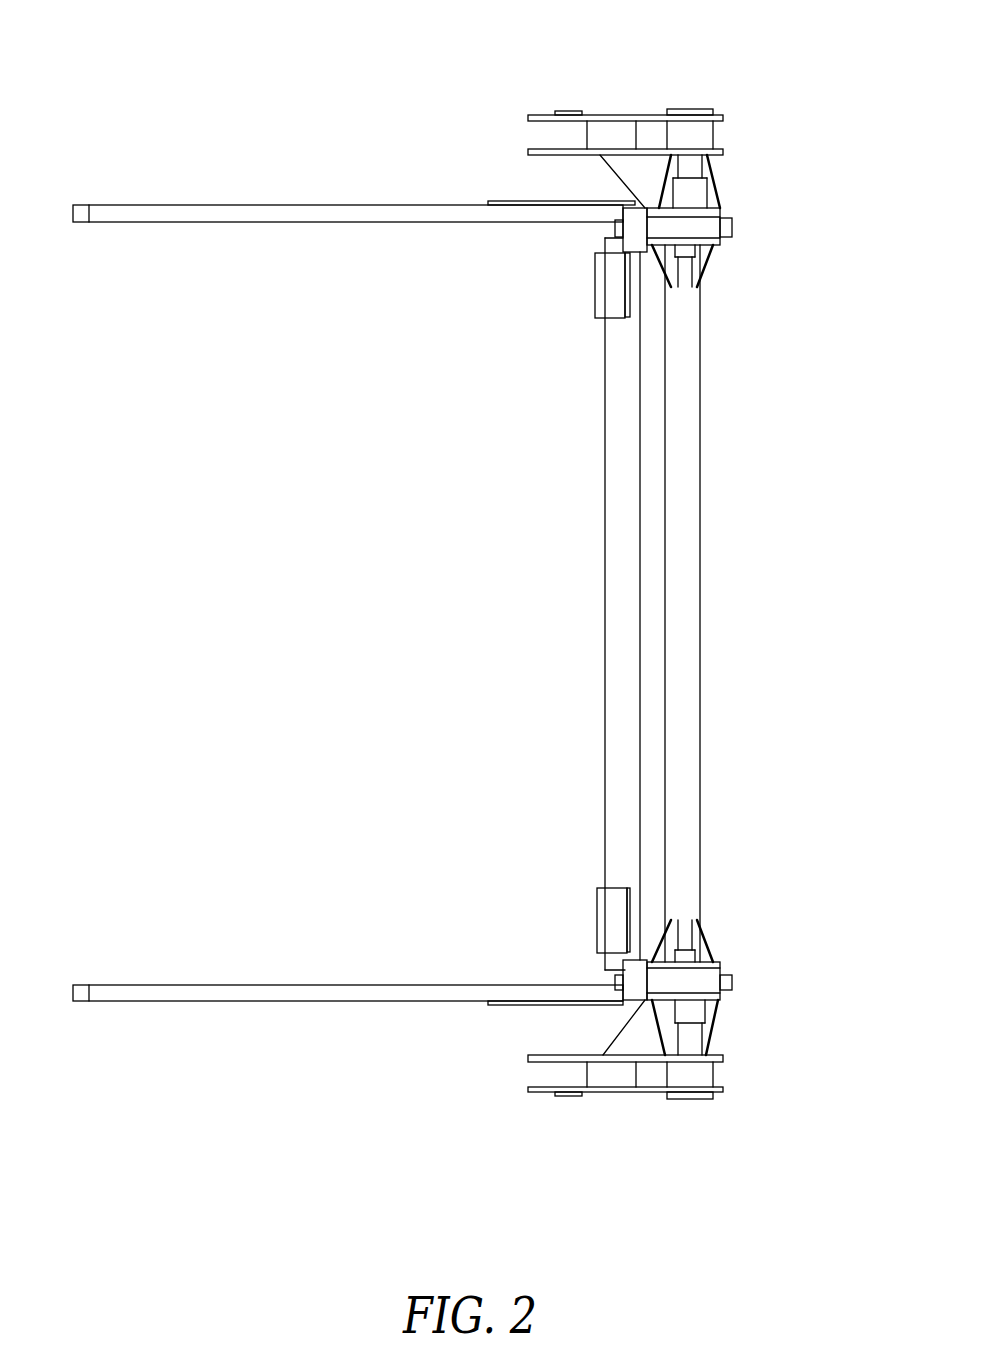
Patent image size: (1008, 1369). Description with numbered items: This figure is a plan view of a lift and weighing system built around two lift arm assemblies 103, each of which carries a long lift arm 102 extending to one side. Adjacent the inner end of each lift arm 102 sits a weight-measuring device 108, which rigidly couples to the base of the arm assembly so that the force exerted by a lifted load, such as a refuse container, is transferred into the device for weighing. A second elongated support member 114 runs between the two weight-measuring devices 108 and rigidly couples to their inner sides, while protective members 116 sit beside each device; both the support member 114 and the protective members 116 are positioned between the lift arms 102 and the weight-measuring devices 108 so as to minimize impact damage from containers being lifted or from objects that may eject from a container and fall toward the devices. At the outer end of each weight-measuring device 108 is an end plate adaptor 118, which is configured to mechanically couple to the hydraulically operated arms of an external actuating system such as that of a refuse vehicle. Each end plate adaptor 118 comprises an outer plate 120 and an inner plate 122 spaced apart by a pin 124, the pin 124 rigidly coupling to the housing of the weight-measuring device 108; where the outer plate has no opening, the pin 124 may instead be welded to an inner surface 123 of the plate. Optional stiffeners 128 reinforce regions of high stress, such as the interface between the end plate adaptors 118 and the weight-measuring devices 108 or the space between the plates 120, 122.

The lift arm 102 is at (316, 223).
The lift arm assembly 103 is at (342, 313).
The weight-measuring device 108 is at (705, 232).
The second elongated support member 114 is at (605, 397).
The protective member 116 is at (595, 283).
The end plate adaptor 118 is at (637, 593).
The outer plate 120 is at (612, 115).
The inner plate 122 is at (565, 150).
The inner surface 123 is at (698, 123).
The pin 124 is at (715, 1073).
The stiffener 128 is at (715, 177).